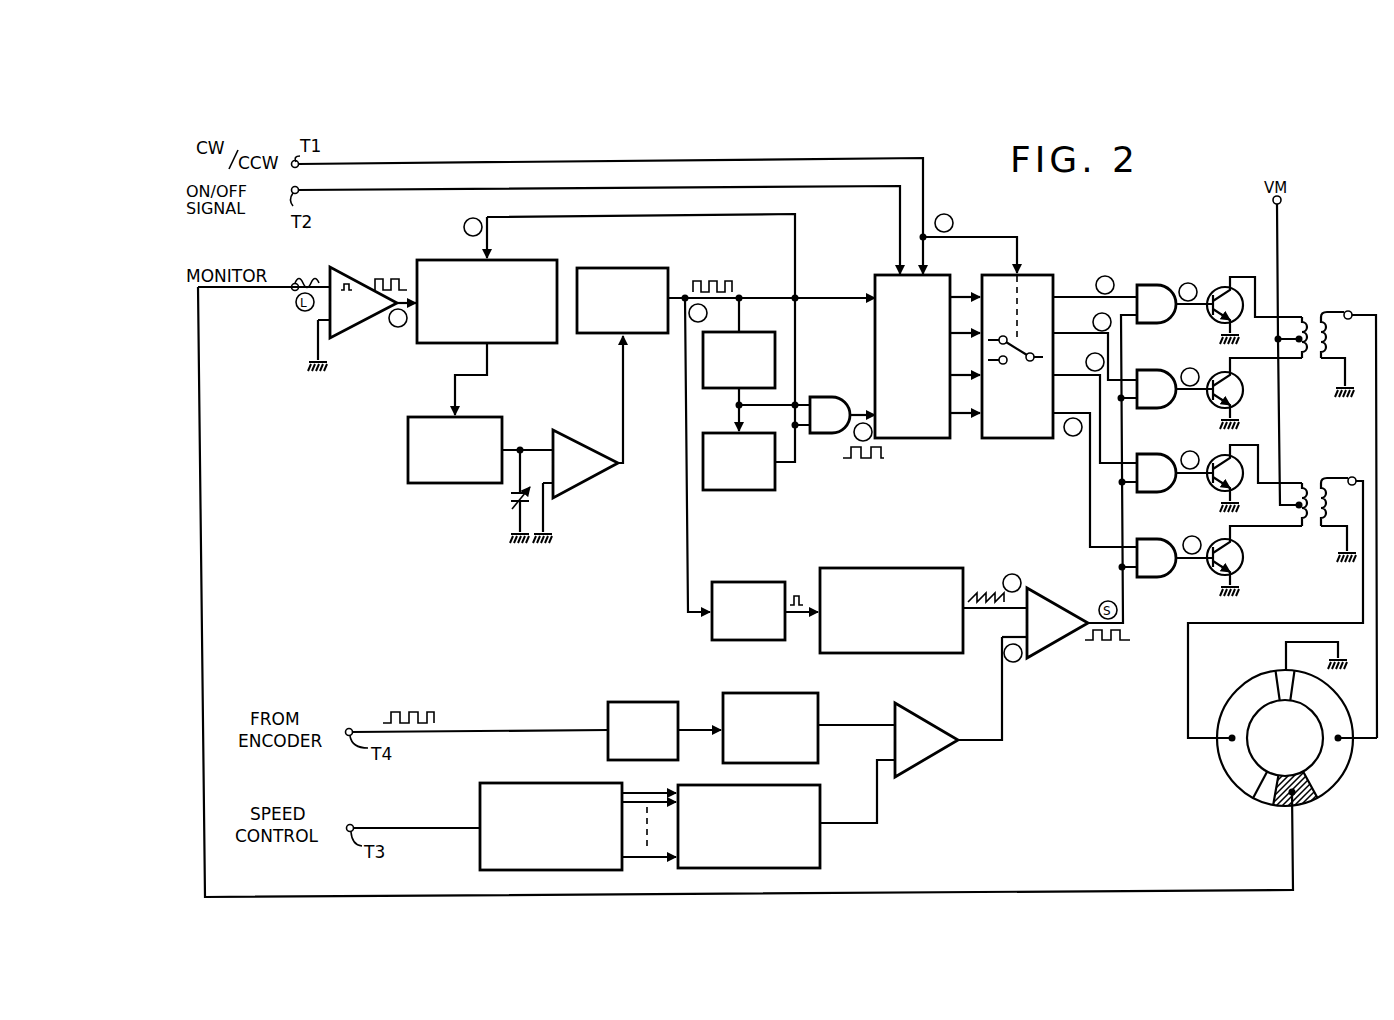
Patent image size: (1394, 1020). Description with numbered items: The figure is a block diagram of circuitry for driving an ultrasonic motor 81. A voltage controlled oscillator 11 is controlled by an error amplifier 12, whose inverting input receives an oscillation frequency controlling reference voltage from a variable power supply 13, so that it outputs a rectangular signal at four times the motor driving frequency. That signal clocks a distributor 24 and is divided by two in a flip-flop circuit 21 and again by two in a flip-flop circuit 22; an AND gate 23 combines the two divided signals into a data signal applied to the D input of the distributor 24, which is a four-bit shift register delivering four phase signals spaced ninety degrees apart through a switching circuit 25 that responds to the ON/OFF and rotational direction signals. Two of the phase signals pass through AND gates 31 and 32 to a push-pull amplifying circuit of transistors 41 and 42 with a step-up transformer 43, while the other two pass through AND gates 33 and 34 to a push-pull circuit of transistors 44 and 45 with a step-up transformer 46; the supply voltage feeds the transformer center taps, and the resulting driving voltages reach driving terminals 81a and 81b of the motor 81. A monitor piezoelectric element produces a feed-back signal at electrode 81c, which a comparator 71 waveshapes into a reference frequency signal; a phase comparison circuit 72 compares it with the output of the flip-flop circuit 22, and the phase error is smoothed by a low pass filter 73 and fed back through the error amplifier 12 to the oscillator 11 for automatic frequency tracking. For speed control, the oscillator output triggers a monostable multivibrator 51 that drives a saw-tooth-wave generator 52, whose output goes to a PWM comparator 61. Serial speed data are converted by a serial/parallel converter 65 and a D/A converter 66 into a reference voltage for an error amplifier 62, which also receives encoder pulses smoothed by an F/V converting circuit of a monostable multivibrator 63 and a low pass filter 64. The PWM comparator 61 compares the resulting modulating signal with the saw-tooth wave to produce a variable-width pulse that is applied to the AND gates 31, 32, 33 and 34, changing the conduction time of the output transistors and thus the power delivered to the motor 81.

The comparator 71 is at (341, 277).
The phase comparison circuit 72 is at (533, 264).
The low pass filter 73 is at (474, 418).
The voltage controlled oscillator 11 is at (622, 268).
The error amplifier 12 is at (569, 438).
The variable power supply 13 is at (534, 486).
The flip-flop circuit 21 is at (756, 336).
The flip-flop circuit 22 is at (714, 440).
The AND gate 23 is at (812, 394).
The distributor 24 is at (880, 276).
The switching circuit 25 is at (1023, 276).
The AND gate 31 is at (1151, 288).
The AND gate 32 is at (1151, 373).
The AND gate 33 is at (1151, 457).
The AND gate 34 is at (1149, 541).
The transistor 41 is at (1216, 290).
The transistor 42 is at (1236, 398).
The step-up transformer 43 is at (1311, 318).
The transistor 44 is at (1215, 490).
The transistor 45 is at (1240, 558).
The step-up transformer 46 is at (1312, 482).
The monostable multivibrator 51 is at (741, 590).
The saw-tooth-wave generator 52 is at (918, 576).
The PWM comparator 61 is at (1047, 610).
The error amplifier 62 is at (922, 716).
The monostable multivibrator 63 is at (652, 708).
The low pass filter 64 is at (782, 706).
The serial/parallel converter 65 is at (542, 794).
The D/A converter 66 is at (822, 801).
The ultrasonic motor 81 is at (1267, 742).
The driving terminal 81a is at (1324, 700).
The driving terminal 81b is at (1233, 766).
The electrode 81c is at (1298, 800).